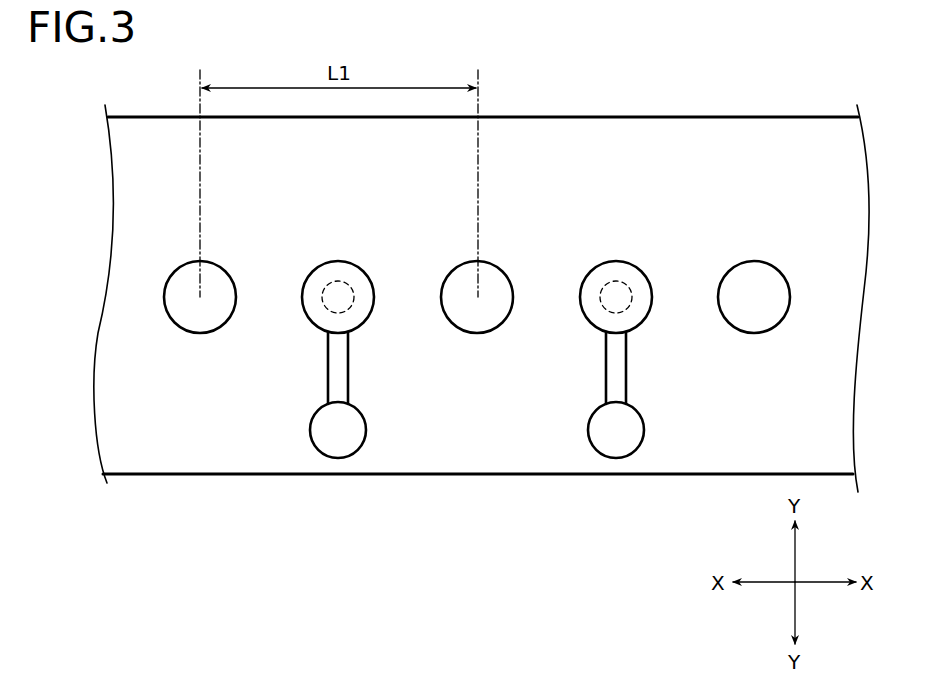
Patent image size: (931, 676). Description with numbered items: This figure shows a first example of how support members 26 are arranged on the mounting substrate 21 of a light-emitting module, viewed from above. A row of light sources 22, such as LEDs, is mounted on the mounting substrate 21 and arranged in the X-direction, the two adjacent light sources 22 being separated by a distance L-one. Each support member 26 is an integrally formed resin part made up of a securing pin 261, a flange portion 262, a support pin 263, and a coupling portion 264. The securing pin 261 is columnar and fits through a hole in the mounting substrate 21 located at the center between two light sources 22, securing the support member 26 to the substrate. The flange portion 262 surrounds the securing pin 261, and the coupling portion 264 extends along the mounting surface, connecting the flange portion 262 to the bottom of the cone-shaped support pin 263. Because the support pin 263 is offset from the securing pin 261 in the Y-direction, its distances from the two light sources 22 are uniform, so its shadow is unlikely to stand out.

The mounting substrate 21 is at (165, 460).
The light source 22 is at (177, 309).
The support member 26 is at (474, 332).
The securing pin 261 is at (339, 290).
The flange portion 262 is at (316, 308).
The support pin 263 is at (356, 425).
The coupling portion 264 is at (341, 368).